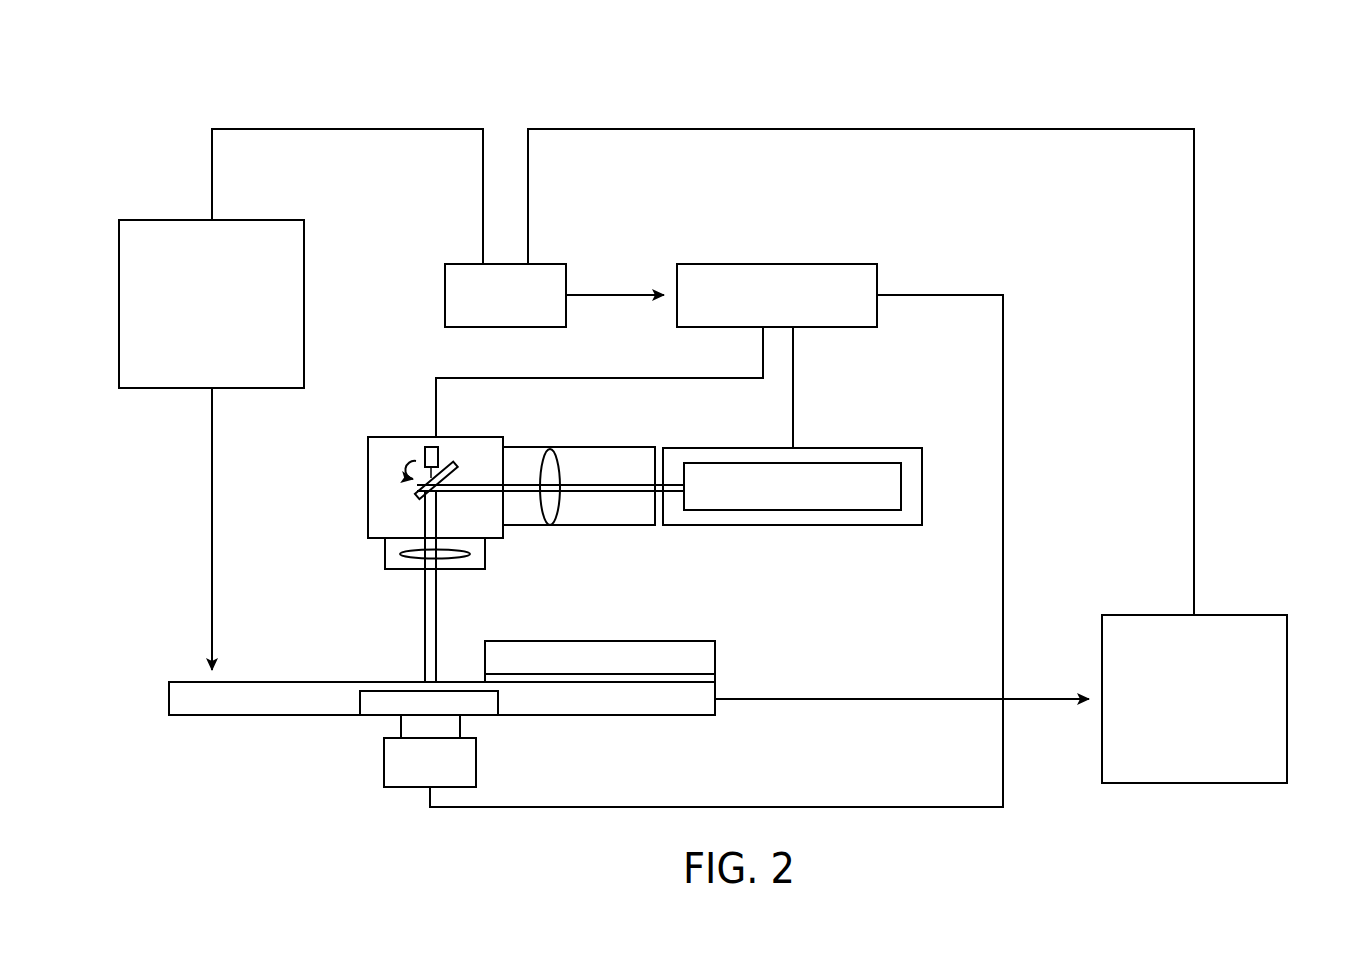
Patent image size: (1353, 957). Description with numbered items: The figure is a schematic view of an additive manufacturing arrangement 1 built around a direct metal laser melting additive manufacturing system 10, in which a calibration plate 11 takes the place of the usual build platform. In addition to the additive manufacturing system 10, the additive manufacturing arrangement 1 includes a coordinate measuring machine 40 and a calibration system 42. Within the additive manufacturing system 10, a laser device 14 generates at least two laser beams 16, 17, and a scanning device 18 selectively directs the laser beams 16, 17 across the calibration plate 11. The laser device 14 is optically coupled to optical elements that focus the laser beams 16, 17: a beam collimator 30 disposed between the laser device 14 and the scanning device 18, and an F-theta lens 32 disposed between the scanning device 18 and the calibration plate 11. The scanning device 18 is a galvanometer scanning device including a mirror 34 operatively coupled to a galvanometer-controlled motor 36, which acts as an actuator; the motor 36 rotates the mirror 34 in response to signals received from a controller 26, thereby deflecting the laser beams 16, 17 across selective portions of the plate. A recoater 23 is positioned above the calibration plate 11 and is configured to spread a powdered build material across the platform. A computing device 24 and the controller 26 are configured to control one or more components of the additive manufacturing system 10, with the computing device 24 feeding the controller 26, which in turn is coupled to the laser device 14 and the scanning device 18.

The additive manufacturing arrangement 1 is at (1246, 88).
The additive manufacturing system 10 is at (870, 198).
The calibration plate 11 is at (268, 681).
The laser device 14 is at (792, 486).
The laser beam 16 is at (618, 482).
The laser beam 17 is at (600, 507).
The scanning device 18 is at (377, 435).
The recoater 23 is at (545, 640).
The computing device 24 is at (505, 295).
The controller 26 is at (777, 295).
The beam collimator 30 is at (560, 457).
The F-theta lens 32 is at (392, 551).
The mirror 34 is at (460, 461).
The galvanometer-controlled motor 36 is at (430, 446).
The coordinate measuring machine 40 is at (211, 304).
The calibration system 42 is at (1194, 699).